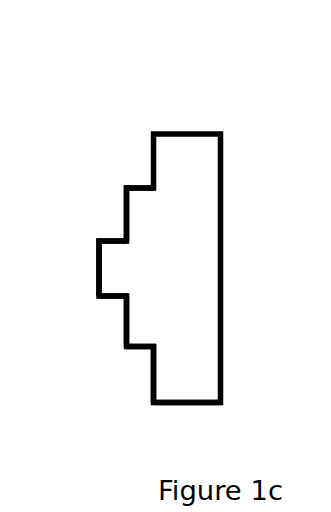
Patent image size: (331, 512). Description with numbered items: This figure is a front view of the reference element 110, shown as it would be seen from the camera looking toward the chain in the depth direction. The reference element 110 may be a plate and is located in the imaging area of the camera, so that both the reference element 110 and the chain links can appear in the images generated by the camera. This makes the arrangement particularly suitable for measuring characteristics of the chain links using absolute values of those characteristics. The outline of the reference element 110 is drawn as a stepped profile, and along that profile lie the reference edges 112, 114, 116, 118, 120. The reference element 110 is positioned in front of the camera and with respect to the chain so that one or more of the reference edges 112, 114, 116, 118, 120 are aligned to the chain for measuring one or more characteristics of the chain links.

The reference element 110 is at (207, 132).
The reference edge 112 is at (151, 176).
The reference edge 114 is at (122, 230).
The reference edge 116 is at (97, 289).
The reference edge 118 is at (124, 346).
The reference edge 120 is at (150, 402).